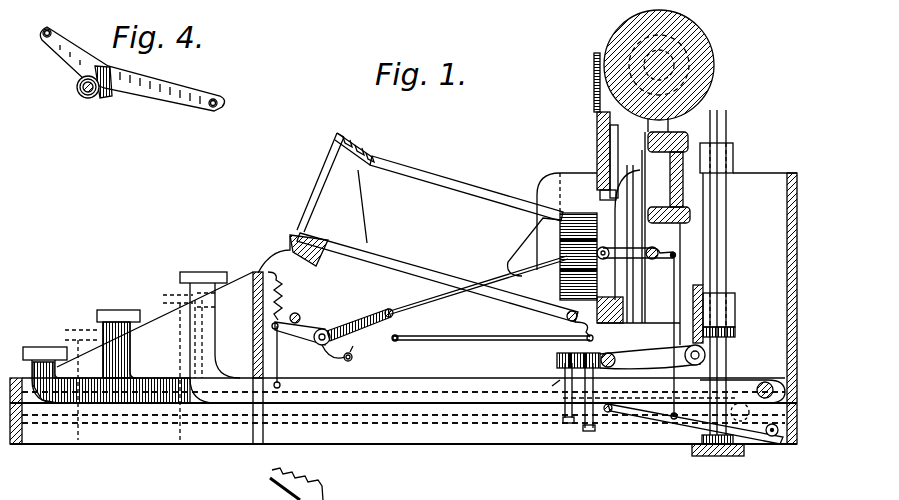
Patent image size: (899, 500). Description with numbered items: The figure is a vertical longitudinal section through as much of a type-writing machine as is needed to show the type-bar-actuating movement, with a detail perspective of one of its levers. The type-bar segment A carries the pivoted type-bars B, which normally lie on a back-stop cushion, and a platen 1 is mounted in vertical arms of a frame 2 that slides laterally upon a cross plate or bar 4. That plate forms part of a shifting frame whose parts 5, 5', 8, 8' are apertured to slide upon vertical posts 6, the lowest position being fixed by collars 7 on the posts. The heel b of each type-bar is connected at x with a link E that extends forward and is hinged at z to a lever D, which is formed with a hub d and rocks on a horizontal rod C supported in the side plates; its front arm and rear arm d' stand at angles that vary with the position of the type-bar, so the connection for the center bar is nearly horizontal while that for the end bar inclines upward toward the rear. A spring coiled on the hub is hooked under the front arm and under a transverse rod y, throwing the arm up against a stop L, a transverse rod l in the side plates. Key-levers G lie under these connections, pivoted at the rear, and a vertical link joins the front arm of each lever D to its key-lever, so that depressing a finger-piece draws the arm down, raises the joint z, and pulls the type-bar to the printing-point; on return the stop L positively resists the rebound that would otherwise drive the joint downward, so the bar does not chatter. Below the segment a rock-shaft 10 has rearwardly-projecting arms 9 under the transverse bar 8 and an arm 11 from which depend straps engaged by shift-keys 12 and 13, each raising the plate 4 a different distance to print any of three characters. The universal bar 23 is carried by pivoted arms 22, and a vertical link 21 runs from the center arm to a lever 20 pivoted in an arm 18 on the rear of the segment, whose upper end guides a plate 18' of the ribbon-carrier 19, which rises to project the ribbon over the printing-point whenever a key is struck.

In FIG. 1, the platen 1 is at (706, 62).
In FIG. 1, the frame 2 is at (664, 231).
In FIG. 1, the cross plate or bar 4 is at (686, 187).
In FIG. 1, the frame part 5 is at (730, 158).
In FIG. 1, the frame part 5' is at (733, 272).
In FIG. 1, the vertical posts 6 is at (728, 240).
In FIG. 1, the collars 7 is at (737, 333).
In FIG. 1, the transverse bar 8 is at (722, 309).
In FIG. 1, the frame part 8' is at (731, 310).
In FIG. 1, the rearwardly-projecting arms 9 is at (685, 352).
In FIG. 1, the rock-shaft 10 is at (616, 360).
In FIG. 1, the projecting arm 11 is at (552, 387).
In FIG. 1, the shift-key 12 is at (402, 391).
In FIG. 1, the shift-key 13 is at (486, 425).
In FIG. 1, the arm 18 is at (638, 227).
In FIG. 1, the plate 18' is at (626, 161).
In FIG. 1, the ribbon-carrier 19 is at (598, 137).
In FIG. 1, the lever 20 is at (622, 259).
In FIG. 1, the vertical link 21 is at (672, 312).
In FIG. 1, the pivoted arms 22 is at (683, 426).
In FIG. 1, the universal bar 23 is at (607, 413).
In FIG. 1, the type-bar segment A is at (573, 182).
In FIG. 1, the type-bars B is at (463, 192).
In FIG. 1, the horizontal rod C is at (326, 329).
In FIG. 4, the lever D is at (152, 78).
In FIG. 1, the lever D is at (357, 328).
In FIG. 1, the link E is at (508, 273).
In FIG. 1, the key-levers G is at (487, 374).
In FIG. 1, the stop L is at (320, 294).
In FIG. 1, the heel or projection b is at (558, 250).
In FIG. 4, the hub d is at (95, 100).
In FIG. 1, the hub d is at (330, 359).
In FIG. 4, the rear arm d' is at (220, 84).
In FIG. 1, the stop l is at (266, 272).
In FIG. 1, the connection point x is at (556, 359).
In FIG. 1, the transverse rod y is at (354, 346).
In FIG. 1, the joint or hinge z is at (398, 341).